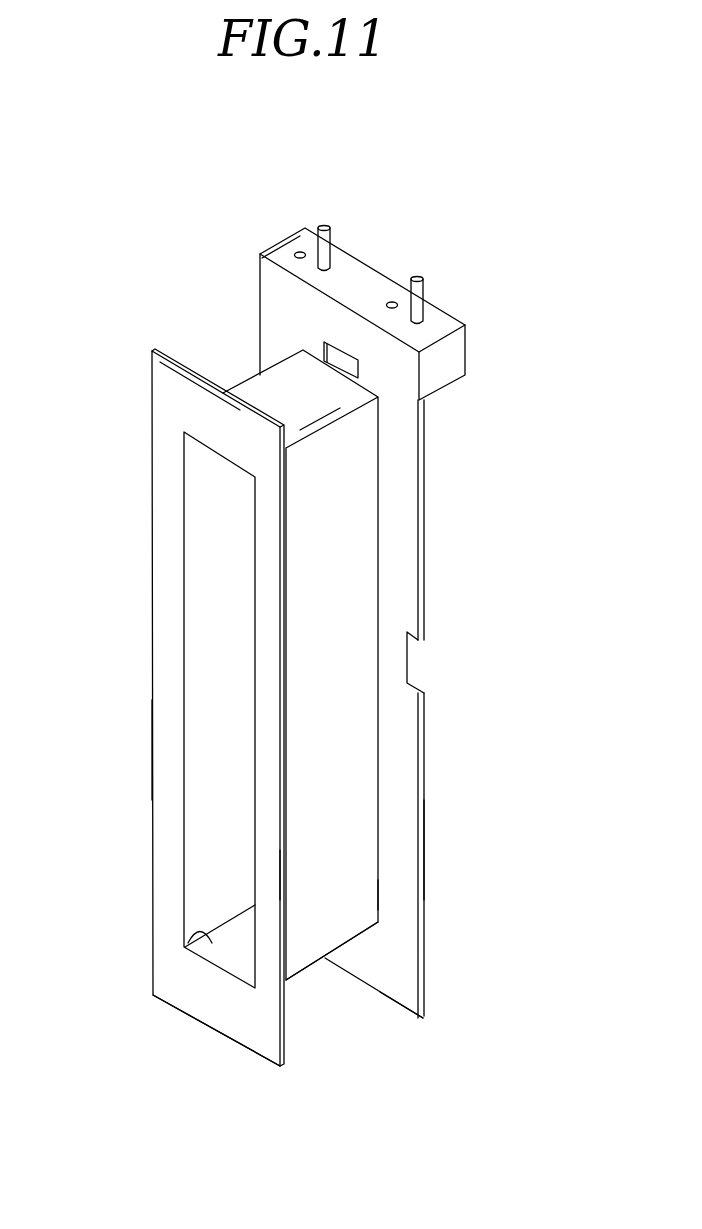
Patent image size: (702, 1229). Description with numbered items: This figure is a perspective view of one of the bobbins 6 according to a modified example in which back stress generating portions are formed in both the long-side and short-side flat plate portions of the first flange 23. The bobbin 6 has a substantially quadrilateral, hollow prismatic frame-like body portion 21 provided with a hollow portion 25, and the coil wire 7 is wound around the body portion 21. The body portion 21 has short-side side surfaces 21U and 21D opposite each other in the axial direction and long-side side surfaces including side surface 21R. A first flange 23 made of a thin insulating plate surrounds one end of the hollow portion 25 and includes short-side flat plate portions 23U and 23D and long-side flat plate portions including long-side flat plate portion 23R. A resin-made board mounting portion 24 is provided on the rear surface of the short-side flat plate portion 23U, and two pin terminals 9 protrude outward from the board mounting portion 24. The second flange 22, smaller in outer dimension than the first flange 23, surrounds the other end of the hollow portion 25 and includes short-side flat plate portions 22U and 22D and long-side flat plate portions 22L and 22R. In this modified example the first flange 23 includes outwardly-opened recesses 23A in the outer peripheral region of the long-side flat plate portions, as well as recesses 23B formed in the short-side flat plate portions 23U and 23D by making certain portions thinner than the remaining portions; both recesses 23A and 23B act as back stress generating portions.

The bobbin 6 is at (94, 284).
The coil wire 7 is at (400, 762).
The pin terminal 9 is at (323, 225).
The body portion 21 is at (232, 370).
The side surface 21U is at (307, 417).
The side surface 21R is at (358, 893).
The side surface 21D is at (183, 944).
The second flange 22 is at (134, 546).
The short-side flat plate portion 22U is at (182, 403).
The long-side flat plate portion 22L is at (160, 752).
The long-side flat plate portion 22R is at (262, 873).
The short-side flat plate portion 22D is at (213, 1013).
The first flange 23 is at (446, 615).
The short-side flat plate portion 23U is at (277, 280).
The recess 23A is at (412, 673).
The recess 23B is at (343, 366).
The long-side flat plate portion 23R is at (428, 873).
The short-side flat plate portion 23D is at (408, 983).
The board mounting portion 24 is at (467, 293).
The hollow portion 25 is at (231, 690).